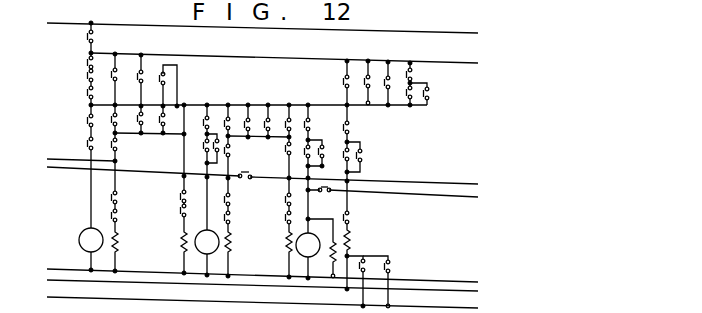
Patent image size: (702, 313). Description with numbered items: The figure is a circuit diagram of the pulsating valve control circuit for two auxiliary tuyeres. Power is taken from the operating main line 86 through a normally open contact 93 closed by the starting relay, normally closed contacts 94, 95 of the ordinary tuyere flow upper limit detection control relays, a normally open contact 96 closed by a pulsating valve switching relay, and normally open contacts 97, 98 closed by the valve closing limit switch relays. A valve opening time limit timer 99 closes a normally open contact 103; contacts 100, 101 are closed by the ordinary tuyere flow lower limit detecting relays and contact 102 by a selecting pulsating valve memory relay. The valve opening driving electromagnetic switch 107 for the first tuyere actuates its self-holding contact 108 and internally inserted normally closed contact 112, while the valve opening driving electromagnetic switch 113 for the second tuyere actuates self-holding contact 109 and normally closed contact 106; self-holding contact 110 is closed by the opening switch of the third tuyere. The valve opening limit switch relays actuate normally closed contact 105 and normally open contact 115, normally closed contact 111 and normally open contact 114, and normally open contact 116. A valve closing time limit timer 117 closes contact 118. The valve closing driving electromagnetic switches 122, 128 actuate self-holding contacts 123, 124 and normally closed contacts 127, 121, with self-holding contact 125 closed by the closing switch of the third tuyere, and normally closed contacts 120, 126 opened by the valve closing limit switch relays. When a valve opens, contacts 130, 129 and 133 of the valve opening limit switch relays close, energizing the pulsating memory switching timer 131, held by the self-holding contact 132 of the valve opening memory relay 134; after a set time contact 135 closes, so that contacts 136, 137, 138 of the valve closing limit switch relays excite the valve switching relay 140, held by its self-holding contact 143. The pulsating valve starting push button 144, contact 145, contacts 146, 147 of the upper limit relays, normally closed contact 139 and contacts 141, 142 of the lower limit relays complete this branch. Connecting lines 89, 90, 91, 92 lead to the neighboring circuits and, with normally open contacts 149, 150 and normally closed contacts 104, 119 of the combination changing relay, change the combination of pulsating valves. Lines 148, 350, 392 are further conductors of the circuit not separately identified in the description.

The operating main line 86 is at (72, 23).
The connecting line 89 is at (55, 158).
The connecting line 90 is at (54, 168).
The connecting line 91 is at (449, 184).
The connecting line 92 is at (434, 197).
The normally open contact 93 is at (86, 37).
The normally closed contact 94 is at (85, 61).
The normally closed contact 95 is at (86, 72).
The normally open contact 96 is at (86, 91).
The normally open contact 97 is at (86, 118).
The normally open contact 98 is at (86, 143).
The valve opening time limit timer 99 is at (91, 250).
The normally open contact 100 is at (109, 79).
The normally open contact 101 is at (136, 79).
The normally open contact 102 is at (159, 79).
The normally open contact 103 is at (107, 120).
The normally closed contact 104 is at (117, 146).
The normally closed contact 105 is at (115, 203).
The normally closed contact 106 is at (128, 218).
The valve opening driving electromagnetic switch 107 is at (119, 243).
The normally open self-holding contact 108 is at (137, 125).
The normally open self-holding contact 109 is at (153, 135).
The normally open self-holding contact 110 is at (175, 119).
The normally closed contact 111 is at (173, 190).
The normally closed contact 112 is at (181, 222).
The valve opening driving electromagnetic switch 113 is at (180, 247).
The normally open contact 114 is at (258, 101).
The normally open contact 115 is at (190, 149).
The normally open contact 116 is at (203, 134).
The valve closing time limit timer 117 is at (207, 220).
The normally open contact 118 is at (219, 116).
The normally closed contact 119 is at (242, 158).
The normally closed contact 120 is at (230, 201).
The normally closed contact 121 is at (230, 219).
The valve closing driving electromagnetic switch 122 is at (231, 252).
The normally open self-holding contact 123 is at (241, 116).
The normally open self-holding contact 124 is at (258, 116).
The normally open self-holding contact 125 is at (278, 158).
The normally closed contact 126 is at (286, 206).
The normally closed contact 127 is at (286, 224).
The valve closing driving electromagnetic switch 128 is at (286, 248).
The normally open contact 129 is at (299, 116).
The normally open contact 130 is at (302, 156).
The pulsating memory switching timer 131 is at (308, 223).
The normally open self-holding contact 132 is at (321, 118).
The normally open contact 133 is at (306, 158).
The valve opening memory relay 134 is at (321, 247).
The normally open contact 135 is at (343, 80).
The normally open contact 136 is at (350, 122).
The normally open contact 137 is at (337, 162).
The normally open contact 138 is at (362, 159).
The normally closed contact 139 is at (348, 218).
The valve switching relay 140 is at (347, 239).
The normally open contact 141 is at (360, 260).
The normally open contact 142 is at (384, 262).
The self-holding contact 143 is at (362, 82).
The pulsating valve starting push button 144 is at (384, 83).
The normally open contact 145 is at (415, 73).
The normally open contact 146 is at (405, 89).
The normally open contact 147 is at (430, 95).
The conductor 148 is at (455, 62).
The normally open contact 149 is at (238, 174).
The normally open contact 150 is at (326, 199).
The conductor 350 is at (90, 280).
The conductor 392 is at (96, 297).